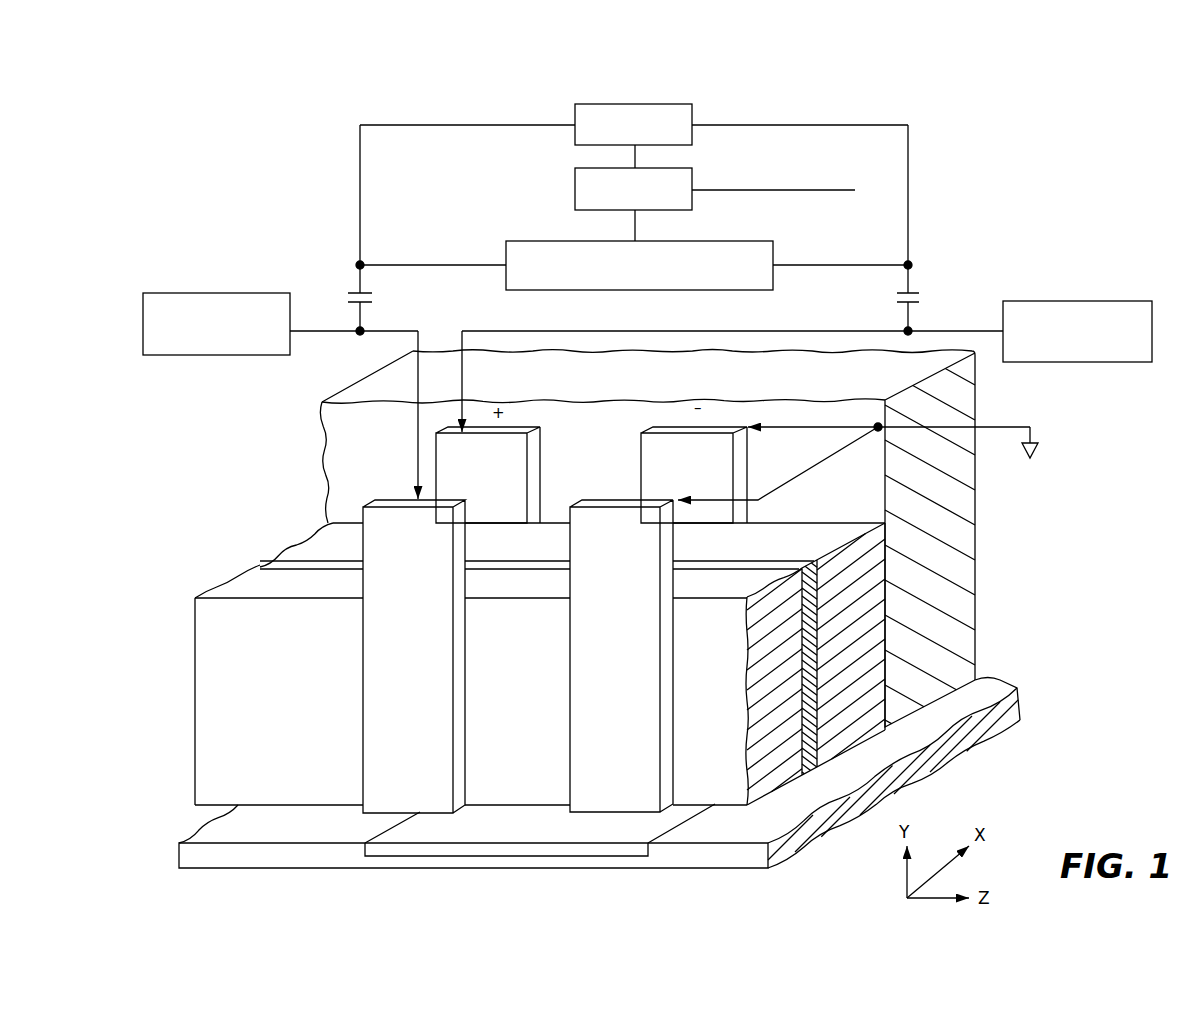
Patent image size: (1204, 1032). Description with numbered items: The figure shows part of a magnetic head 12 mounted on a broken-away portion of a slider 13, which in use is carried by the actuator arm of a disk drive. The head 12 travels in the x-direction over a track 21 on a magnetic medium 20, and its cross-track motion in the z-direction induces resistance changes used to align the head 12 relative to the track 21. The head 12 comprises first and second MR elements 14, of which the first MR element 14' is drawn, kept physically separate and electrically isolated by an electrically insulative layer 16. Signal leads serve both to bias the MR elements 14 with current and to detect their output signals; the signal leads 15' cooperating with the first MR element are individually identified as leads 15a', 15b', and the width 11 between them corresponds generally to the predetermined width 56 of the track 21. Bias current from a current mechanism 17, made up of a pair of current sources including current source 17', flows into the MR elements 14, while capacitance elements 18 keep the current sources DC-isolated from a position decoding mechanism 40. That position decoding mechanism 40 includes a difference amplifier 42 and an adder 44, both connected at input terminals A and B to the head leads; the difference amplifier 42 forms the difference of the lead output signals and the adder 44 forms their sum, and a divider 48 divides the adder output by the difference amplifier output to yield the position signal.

The position decoding mechanism 40 is at (372, 110).
The adder 44 is at (620, 112).
The divider 48 is at (575, 192).
The difference amplifier 42 is at (528, 245).
The capacitance elements 18 is at (377, 300).
The current source 17' is at (280, 396).
The current mechanism 17 is at (1099, 271).
The slider 13 is at (797, 367).
The magnetic head 12 is at (312, 508).
The electrically insulative layer 16 is at (260, 563).
The first MR element 14' is at (437, 685).
The MR elements 14 is at (505, 693).
The signal lead 15a' is at (414, 656).
The signal lead 15b' is at (621, 656).
The signal leads 15' is at (513, 543).
The width between leads 11 is at (569, 666).
The magnetic medium 20 is at (208, 857).
The track 21 is at (607, 855).
The track width 56 is at (679, 823).